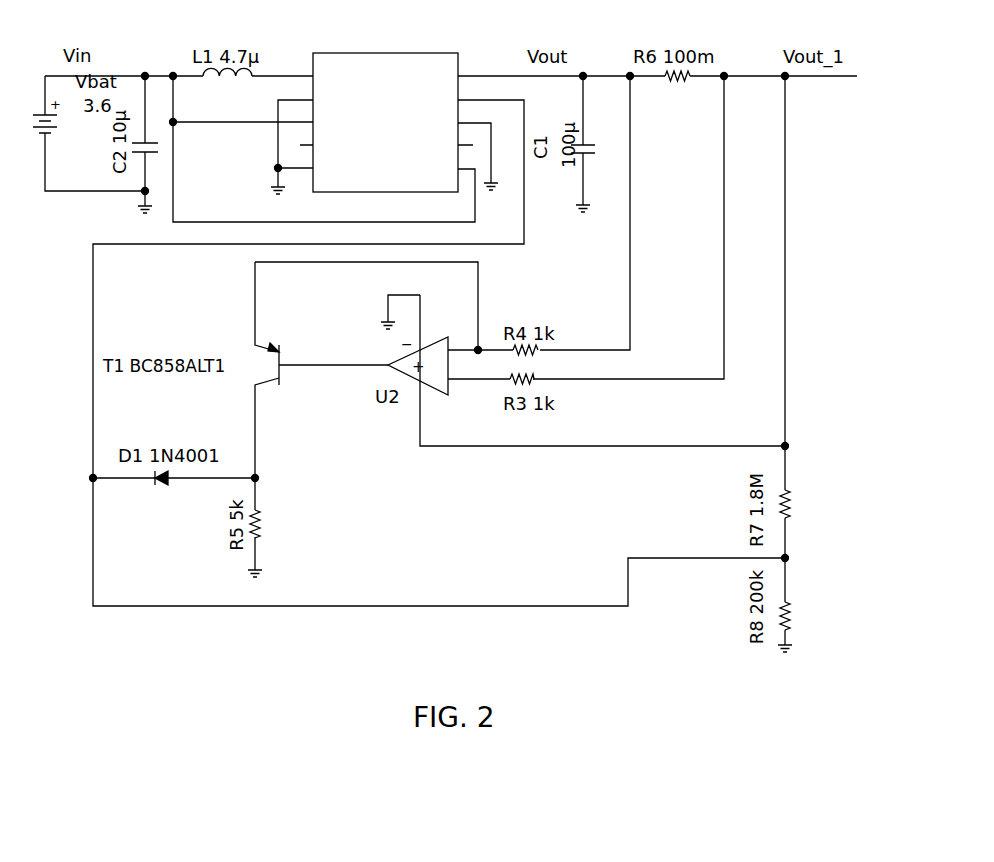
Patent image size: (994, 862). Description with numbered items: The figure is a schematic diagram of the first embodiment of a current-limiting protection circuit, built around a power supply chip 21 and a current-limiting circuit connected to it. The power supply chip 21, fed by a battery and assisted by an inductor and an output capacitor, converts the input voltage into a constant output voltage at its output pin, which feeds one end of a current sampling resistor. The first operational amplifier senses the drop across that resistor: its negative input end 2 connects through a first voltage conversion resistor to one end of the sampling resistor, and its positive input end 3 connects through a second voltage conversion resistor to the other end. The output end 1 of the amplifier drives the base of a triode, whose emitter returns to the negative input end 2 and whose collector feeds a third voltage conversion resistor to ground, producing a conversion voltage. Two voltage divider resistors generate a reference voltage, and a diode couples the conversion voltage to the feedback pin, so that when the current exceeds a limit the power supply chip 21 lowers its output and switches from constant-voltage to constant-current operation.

The power supply chip 21 is at (352, 53).
The output end 1 is at (335, 353).
The negative input end 2 is at (473, 342).
The positive input end 3 is at (471, 390).